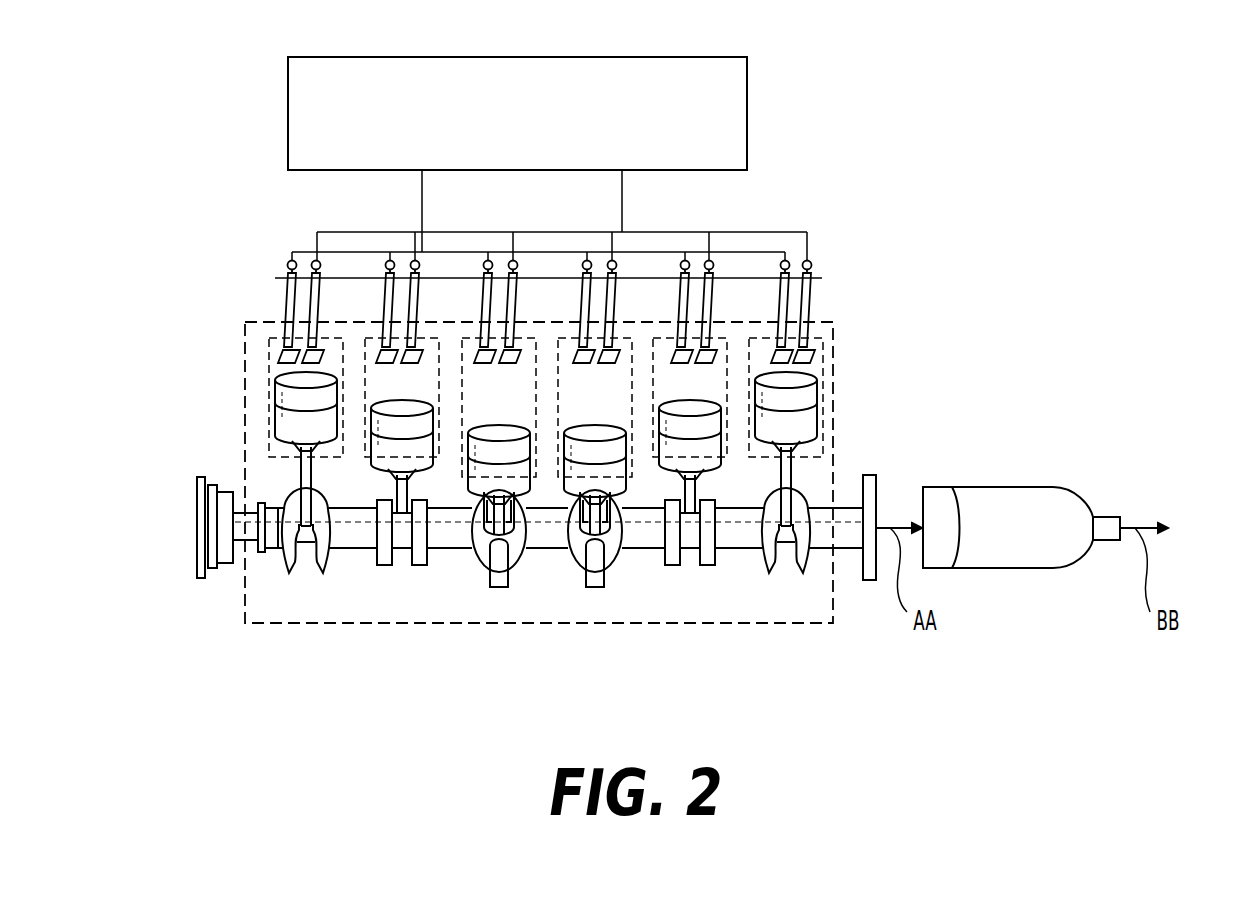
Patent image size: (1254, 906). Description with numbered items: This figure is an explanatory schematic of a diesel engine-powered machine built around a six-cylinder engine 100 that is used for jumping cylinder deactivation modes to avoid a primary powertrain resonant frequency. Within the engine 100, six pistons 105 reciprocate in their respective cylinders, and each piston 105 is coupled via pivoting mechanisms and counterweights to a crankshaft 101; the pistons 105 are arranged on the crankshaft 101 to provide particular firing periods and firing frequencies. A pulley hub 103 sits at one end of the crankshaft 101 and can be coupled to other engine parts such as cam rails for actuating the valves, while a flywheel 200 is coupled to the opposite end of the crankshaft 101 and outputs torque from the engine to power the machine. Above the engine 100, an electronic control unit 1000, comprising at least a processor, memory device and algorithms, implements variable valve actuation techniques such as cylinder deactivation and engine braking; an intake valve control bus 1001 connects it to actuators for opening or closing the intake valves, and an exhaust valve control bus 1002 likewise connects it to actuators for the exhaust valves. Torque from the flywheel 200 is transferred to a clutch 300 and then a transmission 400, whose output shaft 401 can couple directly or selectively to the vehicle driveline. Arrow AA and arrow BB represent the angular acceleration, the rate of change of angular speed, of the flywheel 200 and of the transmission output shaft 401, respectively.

The six-cylinder engine 100 is at (835, 330).
The crankshaft 101 is at (852, 548).
The pulley hub 103 is at (197, 530).
The piston 105 is at (305, 420).
The flywheel 200 is at (870, 475).
The clutch 300 is at (935, 487).
The transmission 400 is at (1045, 487).
The output shaft 401 is at (1112, 517).
The electronic control unit 1000 is at (740, 55).
The intake valve control bus 1001 is at (292, 252).
The exhaust valve control bus 1002 is at (807, 232).